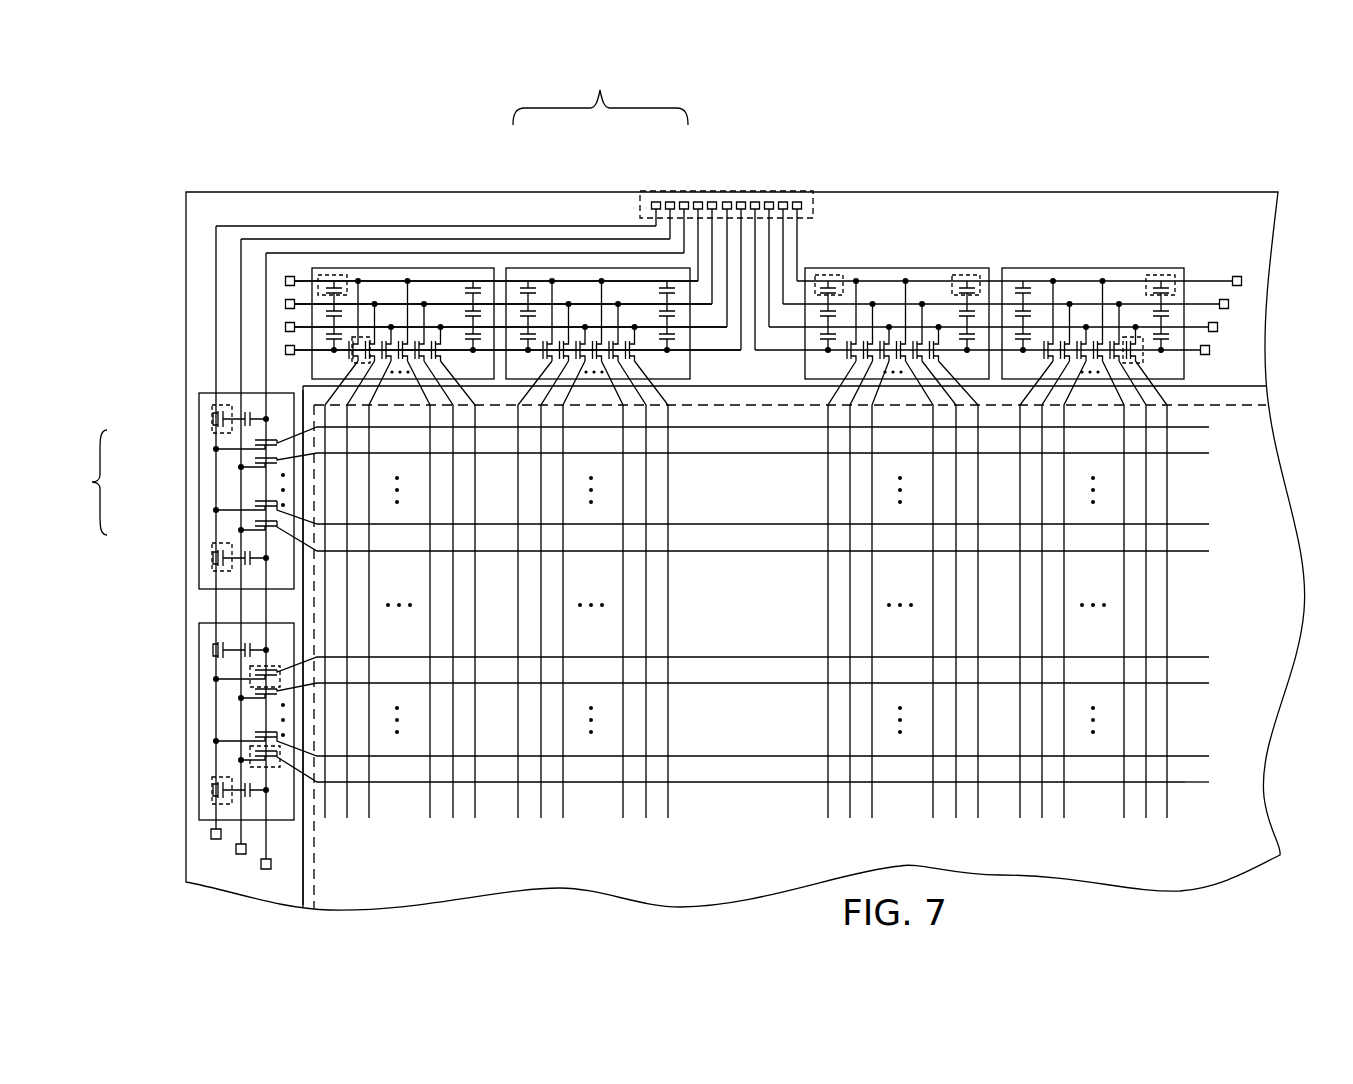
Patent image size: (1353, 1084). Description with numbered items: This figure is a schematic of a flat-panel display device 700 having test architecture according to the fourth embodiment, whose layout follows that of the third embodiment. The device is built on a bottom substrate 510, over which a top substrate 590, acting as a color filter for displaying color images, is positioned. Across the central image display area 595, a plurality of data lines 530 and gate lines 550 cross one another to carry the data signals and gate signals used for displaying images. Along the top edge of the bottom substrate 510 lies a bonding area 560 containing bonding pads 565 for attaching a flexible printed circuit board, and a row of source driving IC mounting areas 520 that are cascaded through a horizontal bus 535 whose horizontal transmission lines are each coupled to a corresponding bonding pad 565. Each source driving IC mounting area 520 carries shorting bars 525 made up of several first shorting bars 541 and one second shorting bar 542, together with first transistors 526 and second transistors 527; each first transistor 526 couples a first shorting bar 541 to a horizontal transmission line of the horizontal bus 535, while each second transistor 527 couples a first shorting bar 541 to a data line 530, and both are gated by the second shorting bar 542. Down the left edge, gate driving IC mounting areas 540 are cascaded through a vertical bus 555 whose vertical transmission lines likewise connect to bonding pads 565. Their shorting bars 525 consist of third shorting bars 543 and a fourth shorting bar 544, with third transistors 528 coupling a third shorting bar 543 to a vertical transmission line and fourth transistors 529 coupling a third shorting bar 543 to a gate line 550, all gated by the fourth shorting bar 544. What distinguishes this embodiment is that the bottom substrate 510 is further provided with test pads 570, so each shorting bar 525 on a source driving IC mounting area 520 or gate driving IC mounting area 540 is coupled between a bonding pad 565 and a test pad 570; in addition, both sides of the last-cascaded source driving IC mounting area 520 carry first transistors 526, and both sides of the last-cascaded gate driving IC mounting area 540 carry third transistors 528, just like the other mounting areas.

The flat-panel display device 700 is at (1262, 131).
The bottom substrate 510 is at (1205, 192).
The source driving IC mounting area 520 is at (1090, 268).
The shorting bar 525 is at (393, 299).
The first transistor 526 is at (333, 274).
The second transistor 527 is at (360, 335).
The third transistor 528 is at (212, 414).
The fourth transistor 529 is at (250, 677).
The data line 530 is at (563, 800).
The horizontal bus 535 is at (499, 279).
The gate driving IC mounting area 540 is at (200, 722).
The first shorting bar 541 is at (562, 325).
The second shorting bar 542 is at (544, 345).
The third shorting bar 543 is at (216, 449).
The fourth shorting bar 544 is at (216, 510).
The gate line 550 is at (1185, 782).
The vertical bus 555 is at (213, 378).
The bonding area 560 is at (751, 250).
The bonding pad 565 is at (680, 197).
The test pad 570 is at (285, 281).
The top substrate 590 is at (303, 872).
The image display area 595 is at (314, 870).